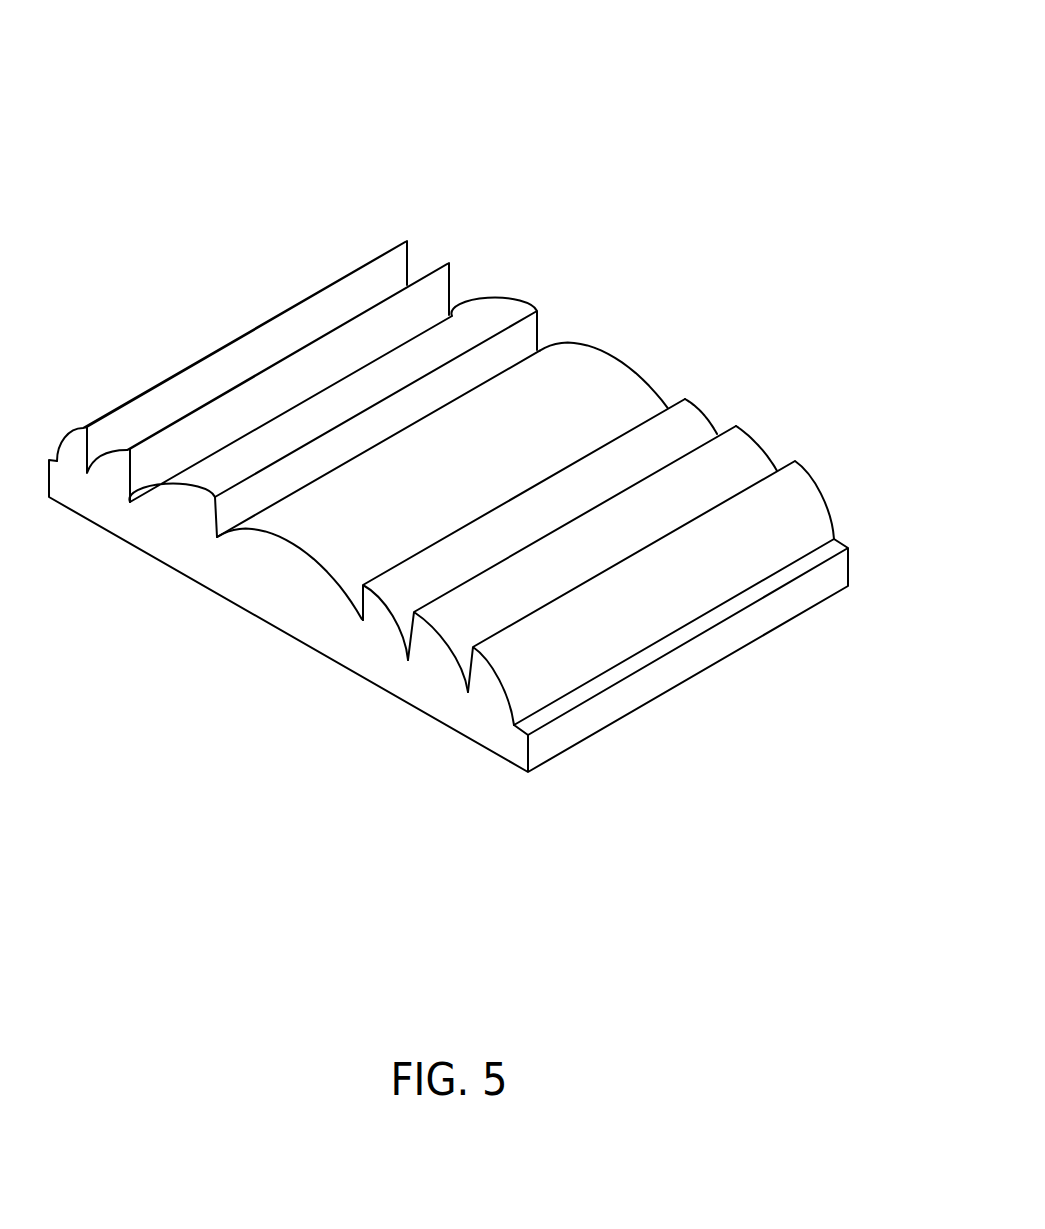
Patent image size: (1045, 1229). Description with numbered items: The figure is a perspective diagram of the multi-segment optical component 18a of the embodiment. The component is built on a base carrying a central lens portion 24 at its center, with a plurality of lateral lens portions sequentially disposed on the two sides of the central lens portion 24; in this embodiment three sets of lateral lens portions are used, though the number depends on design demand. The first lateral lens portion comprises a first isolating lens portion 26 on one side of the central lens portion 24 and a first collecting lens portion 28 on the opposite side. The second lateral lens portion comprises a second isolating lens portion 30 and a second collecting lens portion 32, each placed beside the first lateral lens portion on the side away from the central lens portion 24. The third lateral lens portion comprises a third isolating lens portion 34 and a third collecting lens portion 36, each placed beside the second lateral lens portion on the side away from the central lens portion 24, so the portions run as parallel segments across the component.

The multi-segment optical component 18a is at (702, 107).
The central lens portion 24 is at (597, 385).
The first isolating lens portion 26 is at (677, 433).
The first collecting lens portion 28 is at (497, 317).
The second isolating lens portion 30 is at (735, 473).
The second collecting lens portion 32 is at (437, 263).
The third isolating lens portion 34 is at (800, 517).
The third collecting lens portion 36 is at (357, 265).